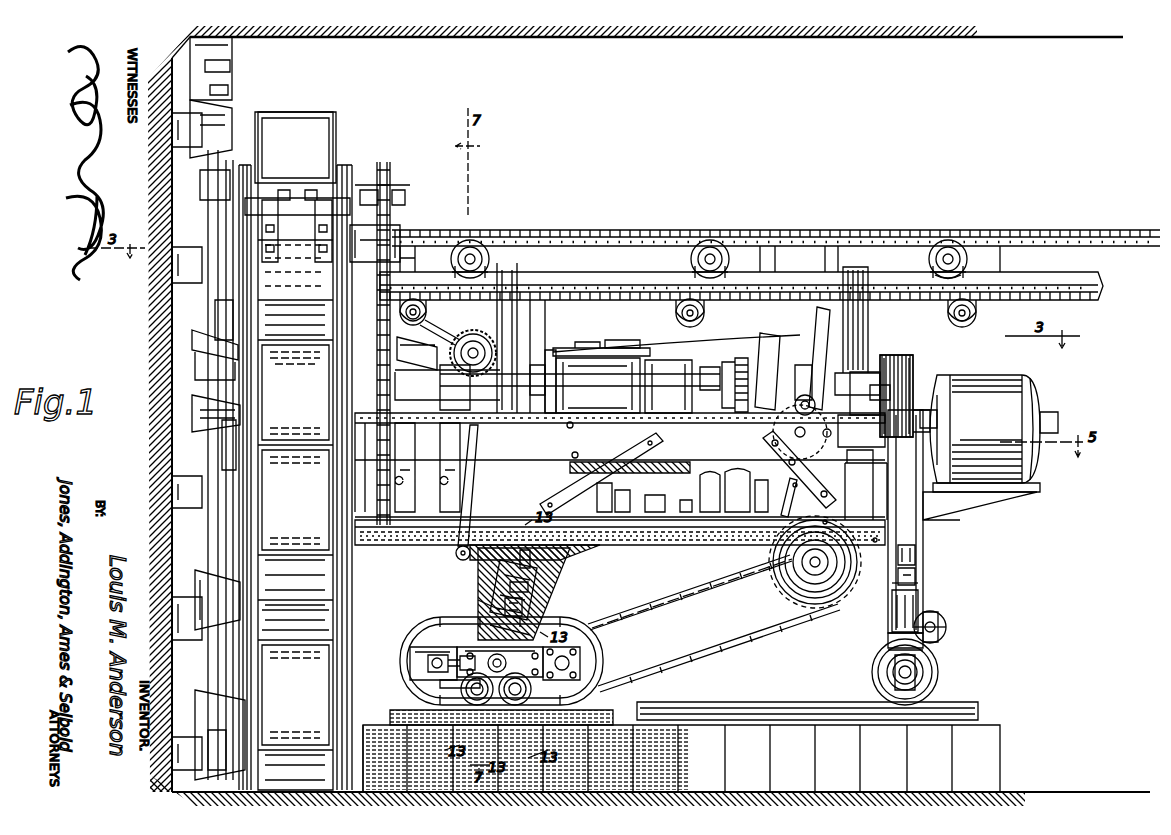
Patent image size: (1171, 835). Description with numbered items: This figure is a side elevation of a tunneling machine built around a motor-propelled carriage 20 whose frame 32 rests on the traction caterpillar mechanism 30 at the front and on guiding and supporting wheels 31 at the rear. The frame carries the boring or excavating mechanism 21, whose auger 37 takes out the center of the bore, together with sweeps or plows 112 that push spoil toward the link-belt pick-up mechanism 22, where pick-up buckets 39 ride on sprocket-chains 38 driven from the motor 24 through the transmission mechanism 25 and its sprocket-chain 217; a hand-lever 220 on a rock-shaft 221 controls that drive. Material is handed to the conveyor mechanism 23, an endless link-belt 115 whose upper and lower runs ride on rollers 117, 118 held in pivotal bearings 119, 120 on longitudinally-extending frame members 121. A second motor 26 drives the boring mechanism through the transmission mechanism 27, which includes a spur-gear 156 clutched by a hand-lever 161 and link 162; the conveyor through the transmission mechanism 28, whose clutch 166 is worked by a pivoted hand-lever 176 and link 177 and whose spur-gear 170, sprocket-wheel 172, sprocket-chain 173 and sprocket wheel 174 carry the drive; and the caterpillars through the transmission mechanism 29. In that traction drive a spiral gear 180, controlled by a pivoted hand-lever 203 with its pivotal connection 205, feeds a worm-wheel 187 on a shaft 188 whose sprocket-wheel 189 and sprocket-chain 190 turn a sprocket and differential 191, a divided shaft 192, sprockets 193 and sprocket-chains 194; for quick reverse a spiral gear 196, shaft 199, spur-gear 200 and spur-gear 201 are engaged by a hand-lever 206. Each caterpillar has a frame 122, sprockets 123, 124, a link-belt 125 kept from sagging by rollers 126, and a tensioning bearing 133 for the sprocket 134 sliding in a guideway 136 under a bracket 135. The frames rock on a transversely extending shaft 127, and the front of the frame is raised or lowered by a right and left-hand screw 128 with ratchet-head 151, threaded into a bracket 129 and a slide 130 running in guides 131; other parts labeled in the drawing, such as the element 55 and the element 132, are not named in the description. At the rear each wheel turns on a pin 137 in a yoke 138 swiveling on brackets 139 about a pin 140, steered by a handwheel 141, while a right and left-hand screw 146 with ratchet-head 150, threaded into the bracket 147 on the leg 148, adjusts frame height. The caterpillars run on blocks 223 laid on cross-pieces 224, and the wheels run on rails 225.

The motor-propelled carriage 20 is at (937, 547).
The boring or excavating mechanism 21 is at (187, 295).
The link-belt pick-up mechanism 22 is at (357, 147).
The conveyor mechanism 23 is at (618, 231).
The motor 24 is at (734, 512).
The transmission mechanism 25 is at (405, 199).
The second motor 26 is at (1018, 402).
The transmission mechanism 27 is at (930, 369).
The transmission mechanism 28 is at (455, 331).
The transmission mechanism 29 is at (815, 585).
The traction caterpillar mechanism 30 is at (436, 611).
The guiding and supporting wheels 31 is at (953, 674).
The frame 32 is at (557, 556).
The auger 37 is at (200, 410).
The link-belts or sprocket-chains 38 is at (352, 592).
The pick-up buckets 39 is at (295, 451).
The shaft 55 is at (520, 398).
The sweeps or plows 112 is at (200, 337).
The endless link-belt 115 is at (766, 246).
The rollers 117 is at (476, 240).
The rollers 118 is at (702, 306).
The pivotal bearings 119 is at (938, 244).
The pivotal bearings 120 is at (995, 240).
The longitudinally-extending frame members 121 is at (560, 284).
The caterpillar frame 122 is at (606, 650).
The sprocket 123 is at (625, 675).
The sprocket 124 is at (428, 638).
The link-belt 125 is at (420, 666).
The rollers 126 is at (455, 723).
The transversely extending shaft 127 is at (490, 610).
The right and left-hand screw 128 is at (545, 568).
The bracket 129 is at (555, 585).
The slide 130 is at (556, 600).
The guides 131 is at (560, 597).
The hatched plate 132 is at (548, 557).
The bearing 133 is at (412, 652).
The sprocket 134 is at (420, 690).
The bracket 135 is at (418, 723).
The guideway 136 is at (418, 678).
The pin 137 is at (915, 668).
The yoke 138 is at (895, 668).
The brackets 139 is at (893, 610).
The pin 140 is at (942, 614).
The handwheel 141 is at (948, 630).
The right and left-hand screw 146 is at (926, 562).
The bracket 147 is at (928, 575).
The leg 148 is at (926, 531).
The ratchet-head 150 is at (895, 585).
The ratchet-head 151 is at (500, 588).
The spur-gear 156 is at (828, 262).
The hand-lever 161 is at (528, 284).
The link 162 is at (680, 345).
The clutch 166 is at (553, 350).
The spur-gear 170 is at (460, 422).
The sprocket-wheel 172 is at (588, 374).
The sprocket-chain 173 is at (420, 300).
The sprocket wheel 174 is at (390, 233).
The pivoted hand-lever 176 is at (598, 346).
The link 177 is at (760, 380).
The spiral gear 180 is at (785, 398).
The worm-wheel 187 is at (805, 474).
The shaft 188 is at (913, 410).
The sprocket-wheel 189 is at (991, 449).
The sprocket-chain 190 is at (838, 478).
The sprocket and differential 191 is at (790, 580).
The divided shaft 192 is at (820, 570).
The sprockets 193 is at (770, 600).
The sprocket-chains 194 is at (718, 645).
The spiral gear 196 is at (808, 392).
The shaft 199 is at (855, 362).
The spur-gear 200 is at (874, 390).
The spur-gear 201 is at (773, 447).
The pivoted hand-lever 203 is at (663, 372).
The pivotal connection 205 is at (622, 342).
The hand-lever 206 is at (870, 322).
The sprocket-chain 217 is at (392, 170).
The hand-lever 220 is at (465, 405).
The rock-shaft 221 is at (450, 540).
The blocks 223 is at (605, 722).
The cross-pieces 224 is at (985, 758).
The rails 225 is at (975, 710).